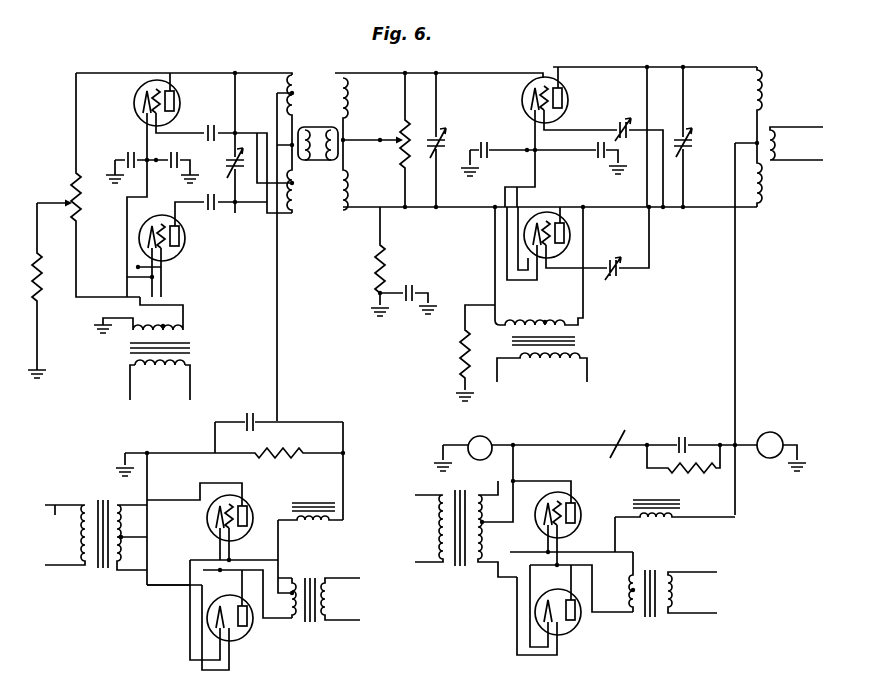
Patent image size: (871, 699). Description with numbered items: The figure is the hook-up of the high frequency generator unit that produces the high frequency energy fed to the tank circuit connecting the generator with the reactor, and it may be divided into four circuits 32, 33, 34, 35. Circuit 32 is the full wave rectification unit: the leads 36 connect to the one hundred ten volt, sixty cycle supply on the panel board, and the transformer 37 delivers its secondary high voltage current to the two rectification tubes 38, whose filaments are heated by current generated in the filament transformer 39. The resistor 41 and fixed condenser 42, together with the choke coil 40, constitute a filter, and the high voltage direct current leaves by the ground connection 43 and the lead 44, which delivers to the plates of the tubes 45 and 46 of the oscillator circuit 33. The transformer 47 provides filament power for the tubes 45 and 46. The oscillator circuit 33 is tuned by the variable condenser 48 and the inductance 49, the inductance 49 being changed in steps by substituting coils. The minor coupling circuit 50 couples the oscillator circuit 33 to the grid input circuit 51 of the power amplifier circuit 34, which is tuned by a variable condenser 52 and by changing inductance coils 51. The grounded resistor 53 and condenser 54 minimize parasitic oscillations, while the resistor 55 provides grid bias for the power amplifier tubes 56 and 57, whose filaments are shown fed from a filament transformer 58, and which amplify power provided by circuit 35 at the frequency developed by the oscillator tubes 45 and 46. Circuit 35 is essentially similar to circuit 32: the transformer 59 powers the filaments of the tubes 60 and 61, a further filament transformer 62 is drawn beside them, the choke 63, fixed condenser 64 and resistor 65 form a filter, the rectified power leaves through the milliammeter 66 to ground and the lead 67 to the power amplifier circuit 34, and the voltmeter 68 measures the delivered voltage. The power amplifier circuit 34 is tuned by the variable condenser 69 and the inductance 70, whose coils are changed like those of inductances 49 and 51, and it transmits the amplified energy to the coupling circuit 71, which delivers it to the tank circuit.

The full wave rectification circuit 32 is at (160, 580).
The oscillator circuit 33 is at (76, 104).
The power amplifier circuit 34 is at (741, 67).
The rectifier power supply circuit 35 is at (580, 433).
The leads 36 is at (61, 535).
The transformer 37 is at (100, 576).
The rectification tubes 38 is at (246, 506).
The filament transformer 39 is at (314, 622).
The choke coil 40 is at (320, 526).
The resistor 41 is at (302, 456).
The fixed condenser 42 is at (249, 415).
The ground connection 43 is at (120, 470).
The lead 44 is at (279, 300).
The oscillator tube 45 is at (134, 97).
The oscillator tube 46 is at (183, 248).
The filament transformer 47 is at (195, 341).
The variable condenser 48 is at (240, 185).
The inductance 49 is at (292, 74).
The coupling circuit 50 is at (317, 162).
The grid input circuit 51 is at (348, 90).
The variable condenser 52 is at (447, 125).
The resistor 53 is at (375, 256).
The condenser 54 is at (418, 285).
The resistor 55 is at (398, 136).
The power amplifier tube 56 is at (570, 96).
The power amplifier tube 57 is at (522, 228).
The filament transformer 58 is at (586, 340).
The transformer 59 is at (459, 567).
The tube 60 is at (572, 634).
The tube 61 is at (575, 509).
The filament transformer 62 is at (684, 595).
The choke 63 is at (673, 523).
The fixed condenser 64 is at (690, 437).
The resistor 65 is at (685, 476).
The milliammeter 66 is at (490, 437).
The lead 67 is at (737, 293).
The voltmeter 68 is at (779, 434).
The variable condenser 69 is at (693, 140).
The inductance 70 is at (765, 90).
The coupling circuit 71 is at (786, 148).